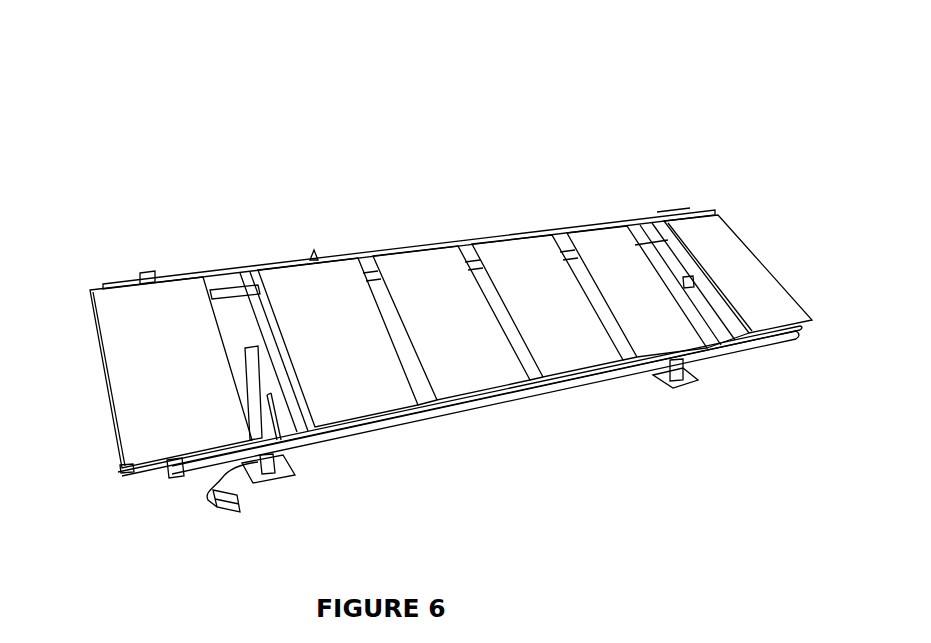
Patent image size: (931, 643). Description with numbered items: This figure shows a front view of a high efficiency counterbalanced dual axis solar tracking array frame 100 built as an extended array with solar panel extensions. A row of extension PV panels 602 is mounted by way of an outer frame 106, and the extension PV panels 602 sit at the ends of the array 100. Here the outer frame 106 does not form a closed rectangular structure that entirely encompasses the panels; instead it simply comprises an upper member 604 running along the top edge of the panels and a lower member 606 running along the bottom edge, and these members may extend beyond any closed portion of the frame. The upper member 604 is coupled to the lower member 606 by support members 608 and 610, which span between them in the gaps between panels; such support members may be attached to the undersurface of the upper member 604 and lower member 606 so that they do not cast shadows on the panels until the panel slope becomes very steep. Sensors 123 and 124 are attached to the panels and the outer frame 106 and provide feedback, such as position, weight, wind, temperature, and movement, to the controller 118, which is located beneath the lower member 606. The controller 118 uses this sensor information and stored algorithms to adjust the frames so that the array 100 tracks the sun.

The high efficiency counterbalanced dual axis solar tracking array frame 100 is at (477, 184).
The outer frame 106 is at (260, 251).
The controller 118 is at (210, 516).
The sensor 123 is at (121, 480).
The sensor 124 is at (139, 264).
The extension PV panel 602 is at (94, 277).
The upper member 604 is at (358, 243).
The lower member 606 is at (351, 441).
The support member 608 is at (238, 293).
The support member 610 is at (652, 224).